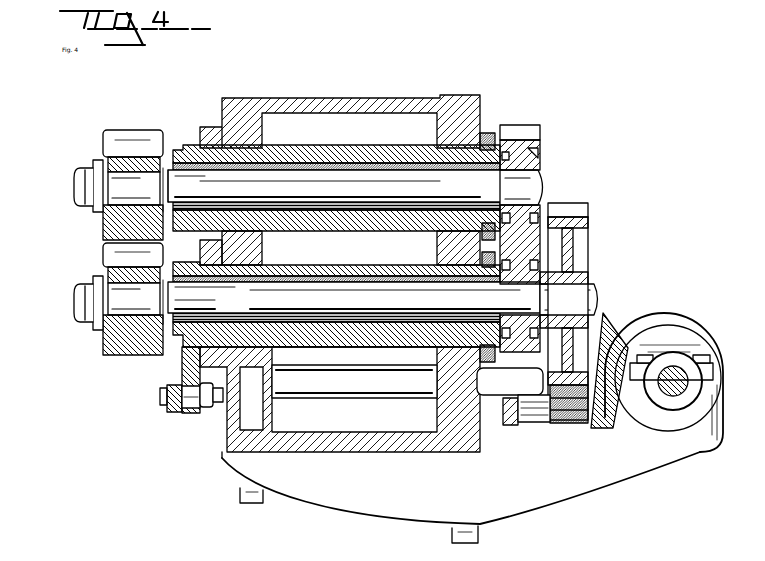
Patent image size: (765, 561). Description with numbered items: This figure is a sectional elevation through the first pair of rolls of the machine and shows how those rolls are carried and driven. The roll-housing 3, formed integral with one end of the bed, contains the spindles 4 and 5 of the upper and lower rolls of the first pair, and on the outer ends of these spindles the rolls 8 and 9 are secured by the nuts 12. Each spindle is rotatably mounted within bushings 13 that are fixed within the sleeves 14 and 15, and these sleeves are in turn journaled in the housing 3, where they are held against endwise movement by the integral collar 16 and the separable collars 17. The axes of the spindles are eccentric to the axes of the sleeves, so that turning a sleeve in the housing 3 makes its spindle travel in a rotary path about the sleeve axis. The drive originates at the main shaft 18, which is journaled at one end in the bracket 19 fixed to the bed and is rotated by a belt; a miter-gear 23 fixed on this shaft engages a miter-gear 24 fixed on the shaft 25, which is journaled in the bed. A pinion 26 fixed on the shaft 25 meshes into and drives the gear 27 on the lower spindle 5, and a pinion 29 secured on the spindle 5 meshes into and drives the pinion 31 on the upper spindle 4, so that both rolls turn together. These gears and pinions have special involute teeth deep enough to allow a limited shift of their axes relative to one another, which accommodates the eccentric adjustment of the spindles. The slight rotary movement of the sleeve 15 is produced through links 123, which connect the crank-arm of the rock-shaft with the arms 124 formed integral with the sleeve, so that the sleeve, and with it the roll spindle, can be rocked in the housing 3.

The roll-housing 3 is at (335, 97).
The spindle 4 is at (540, 183).
The spindle 5 is at (592, 297).
The roll 8 is at (125, 129).
The roll 9 is at (130, 355).
The nut 12 is at (78, 171).
The bushing 13 is at (270, 158).
The sleeve 14 is at (342, 155).
The sleeve 15 is at (346, 268).
The integral collar 16 is at (190, 144).
The separable collar 17 is at (489, 133).
The main shaft 18 is at (663, 397).
The bracket 19 is at (521, 510).
The miter-gear 23 is at (698, 446).
The miter-gear 24 is at (620, 324).
The shaft 25 is at (352, 399).
The pinion 26 is at (577, 426).
The gear 27 is at (590, 245).
The pinion 29 is at (521, 353).
The pinion 31 is at (540, 129).
The link 123 is at (172, 410).
The arm 124 is at (195, 414).